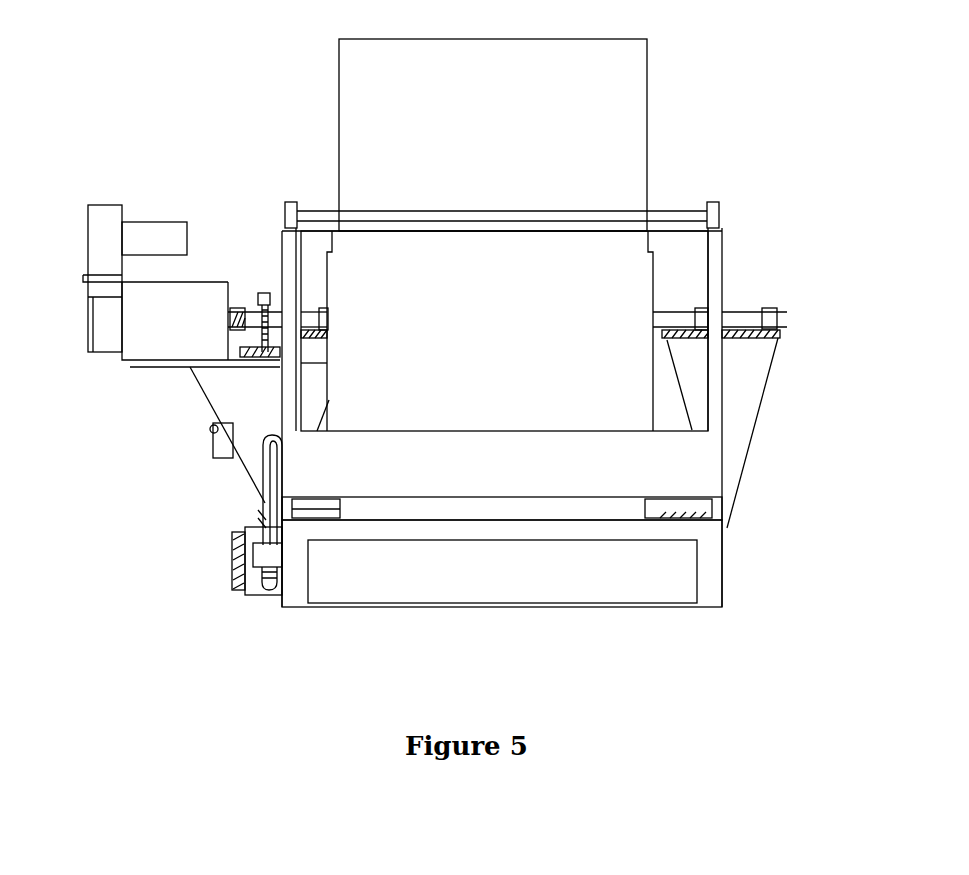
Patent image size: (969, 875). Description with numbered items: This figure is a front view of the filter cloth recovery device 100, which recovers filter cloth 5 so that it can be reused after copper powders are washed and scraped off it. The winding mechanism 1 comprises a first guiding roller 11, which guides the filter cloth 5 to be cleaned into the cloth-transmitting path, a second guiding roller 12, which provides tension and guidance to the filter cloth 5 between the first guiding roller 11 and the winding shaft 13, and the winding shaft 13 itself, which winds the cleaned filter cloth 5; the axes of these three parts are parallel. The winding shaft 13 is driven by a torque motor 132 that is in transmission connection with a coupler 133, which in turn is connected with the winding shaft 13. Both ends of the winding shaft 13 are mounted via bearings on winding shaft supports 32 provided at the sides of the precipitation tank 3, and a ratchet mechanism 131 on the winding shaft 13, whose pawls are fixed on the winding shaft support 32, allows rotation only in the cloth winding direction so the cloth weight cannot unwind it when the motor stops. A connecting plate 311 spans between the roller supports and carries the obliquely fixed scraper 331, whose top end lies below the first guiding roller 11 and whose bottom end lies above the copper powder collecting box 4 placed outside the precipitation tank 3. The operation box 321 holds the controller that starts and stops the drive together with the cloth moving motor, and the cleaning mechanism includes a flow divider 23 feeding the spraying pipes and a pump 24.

The filter cloth recovery device 100 is at (160, 84).
The filter cloth 5 is at (385, 77).
The scraper 331 is at (565, 277).
The coupler 133 is at (236, 308).
The ratchet mechanism 131 is at (264, 292).
The first guiding roller 11 is at (680, 213).
The torque motor 132 is at (148, 320).
The winding shaft 13 is at (730, 320).
The winding mechanism 1 is at (852, 212).
The winding shaft support 32 is at (226, 392).
The operation box 321 is at (218, 437).
The connecting plate 311 is at (352, 485).
The second guiding roller 12 is at (687, 516).
The pump 24 is at (255, 538).
The precipitation tank 3 is at (708, 583).
The flow divider 23 is at (268, 555).
The copper powder collecting box 4 is at (605, 583).